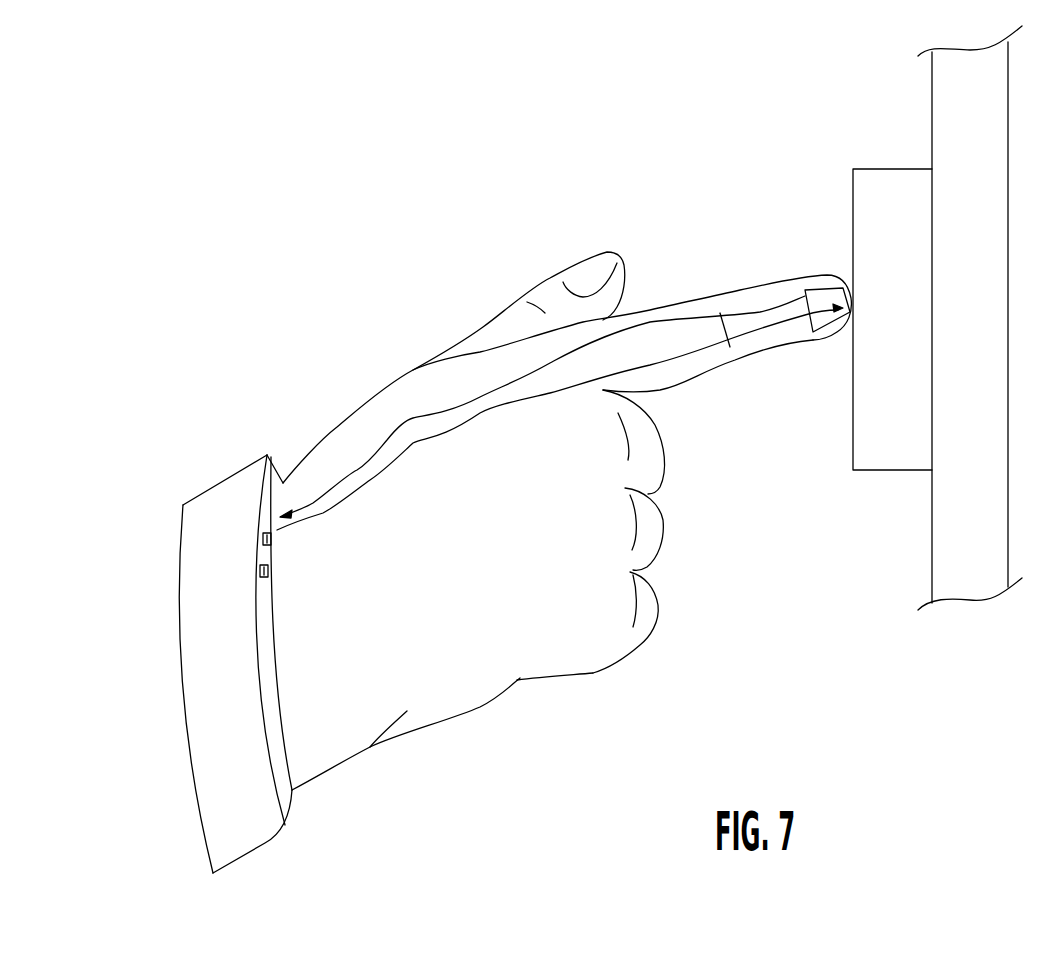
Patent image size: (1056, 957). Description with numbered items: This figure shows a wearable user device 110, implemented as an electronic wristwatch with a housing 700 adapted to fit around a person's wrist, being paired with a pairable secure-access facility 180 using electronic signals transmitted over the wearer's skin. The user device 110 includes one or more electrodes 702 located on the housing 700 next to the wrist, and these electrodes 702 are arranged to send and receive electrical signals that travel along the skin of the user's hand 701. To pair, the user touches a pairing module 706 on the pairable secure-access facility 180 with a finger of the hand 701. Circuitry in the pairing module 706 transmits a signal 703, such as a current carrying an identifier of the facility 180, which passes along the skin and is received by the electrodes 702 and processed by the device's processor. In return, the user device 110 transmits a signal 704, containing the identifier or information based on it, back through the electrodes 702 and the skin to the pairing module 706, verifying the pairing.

The user device 110 is at (278, 670).
The pairable secure-access facility 180 is at (935, 105).
The housing 700 is at (221, 490).
The hand 701 is at (593, 675).
The electrodes 702 is at (272, 541).
The signal 703 is at (412, 422).
The signal 704 is at (443, 438).
The pairing module 706 is at (853, 443).